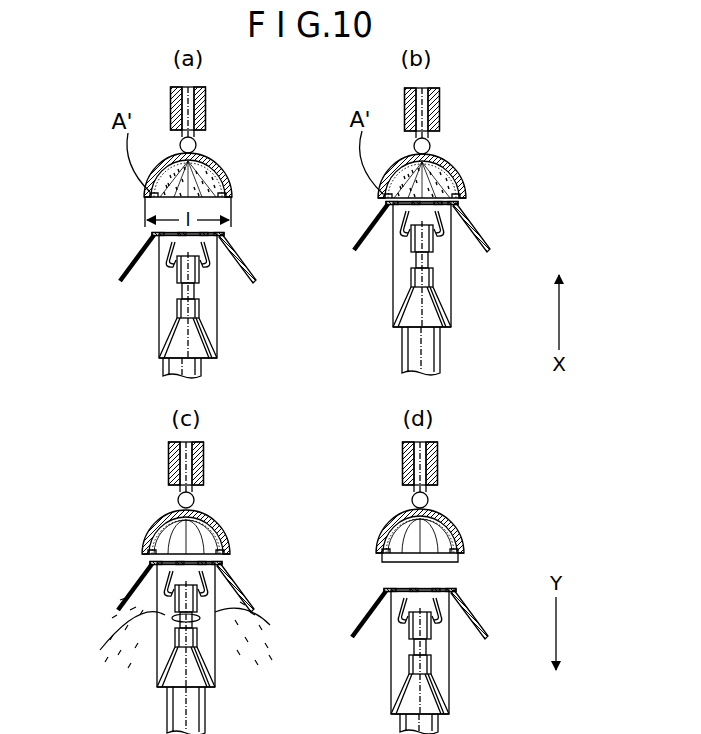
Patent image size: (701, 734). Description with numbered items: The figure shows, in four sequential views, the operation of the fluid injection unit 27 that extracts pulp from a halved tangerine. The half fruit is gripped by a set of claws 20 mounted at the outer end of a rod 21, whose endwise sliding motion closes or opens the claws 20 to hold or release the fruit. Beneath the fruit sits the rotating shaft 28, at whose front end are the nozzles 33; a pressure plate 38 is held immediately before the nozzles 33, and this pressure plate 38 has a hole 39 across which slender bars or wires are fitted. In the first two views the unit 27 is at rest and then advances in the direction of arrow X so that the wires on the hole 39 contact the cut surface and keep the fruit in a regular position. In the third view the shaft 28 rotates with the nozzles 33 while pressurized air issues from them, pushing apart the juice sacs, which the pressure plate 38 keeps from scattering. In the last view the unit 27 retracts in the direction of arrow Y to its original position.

The claws 20 is at (222, 176).
The rod 21 is at (192, 110).
The fluid injection unit 27 is at (125, 247).
The rotating shaft 28 is at (183, 290).
The nozzles 33 is at (206, 260).
The pressure plate 38 is at (246, 262).
The hole 39 is at (228, 232).